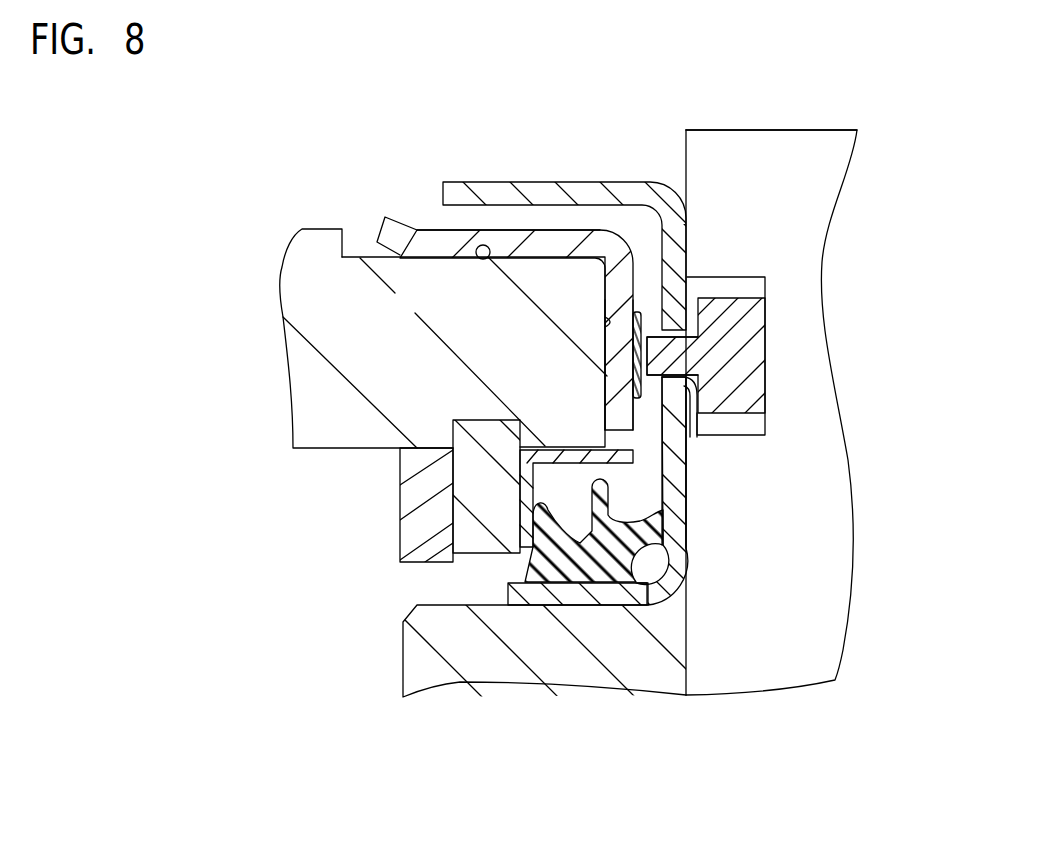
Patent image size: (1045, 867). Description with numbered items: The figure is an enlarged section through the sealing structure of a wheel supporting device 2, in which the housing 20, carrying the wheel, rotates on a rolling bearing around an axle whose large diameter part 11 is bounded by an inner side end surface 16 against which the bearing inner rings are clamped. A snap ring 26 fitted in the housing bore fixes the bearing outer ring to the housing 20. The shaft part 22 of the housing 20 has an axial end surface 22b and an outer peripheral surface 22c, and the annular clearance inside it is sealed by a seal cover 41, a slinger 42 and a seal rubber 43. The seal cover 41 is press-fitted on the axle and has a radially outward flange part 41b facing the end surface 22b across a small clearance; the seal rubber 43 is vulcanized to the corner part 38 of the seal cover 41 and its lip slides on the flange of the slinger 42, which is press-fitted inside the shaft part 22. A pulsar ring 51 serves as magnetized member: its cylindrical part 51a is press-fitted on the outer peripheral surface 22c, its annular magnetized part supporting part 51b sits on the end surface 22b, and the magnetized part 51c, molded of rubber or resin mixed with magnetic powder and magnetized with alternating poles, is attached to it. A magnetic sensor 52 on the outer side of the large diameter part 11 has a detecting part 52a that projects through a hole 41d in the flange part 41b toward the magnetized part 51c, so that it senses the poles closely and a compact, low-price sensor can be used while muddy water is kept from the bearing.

The wheel supporting device 2 is at (880, 179).
The large diameter part 11 is at (812, 247).
The inner side end surface 16 is at (686, 672).
The housing 20 is at (776, 127).
The shaft part 22 is at (504, 335).
The end surface 22b is at (612, 316).
The outer peripheral surface 22c is at (484, 260).
The snap ring 26 is at (458, 438).
The corner part 38 is at (686, 574).
The seal cover 41 is at (690, 548).
The flange part 41b is at (688, 497).
The hole 41d is at (692, 400).
The slinger 42 is at (557, 446).
The seal rubber 43 is at (610, 583).
The pulsar ring 51 is at (602, 309).
The cylindrical part 51a is at (420, 259).
The magnetized part supporting part 51b is at (613, 403).
The magnetized part 51c is at (636, 322).
The magnetic sensor 52 is at (745, 307).
The detecting part 52a is at (667, 355).